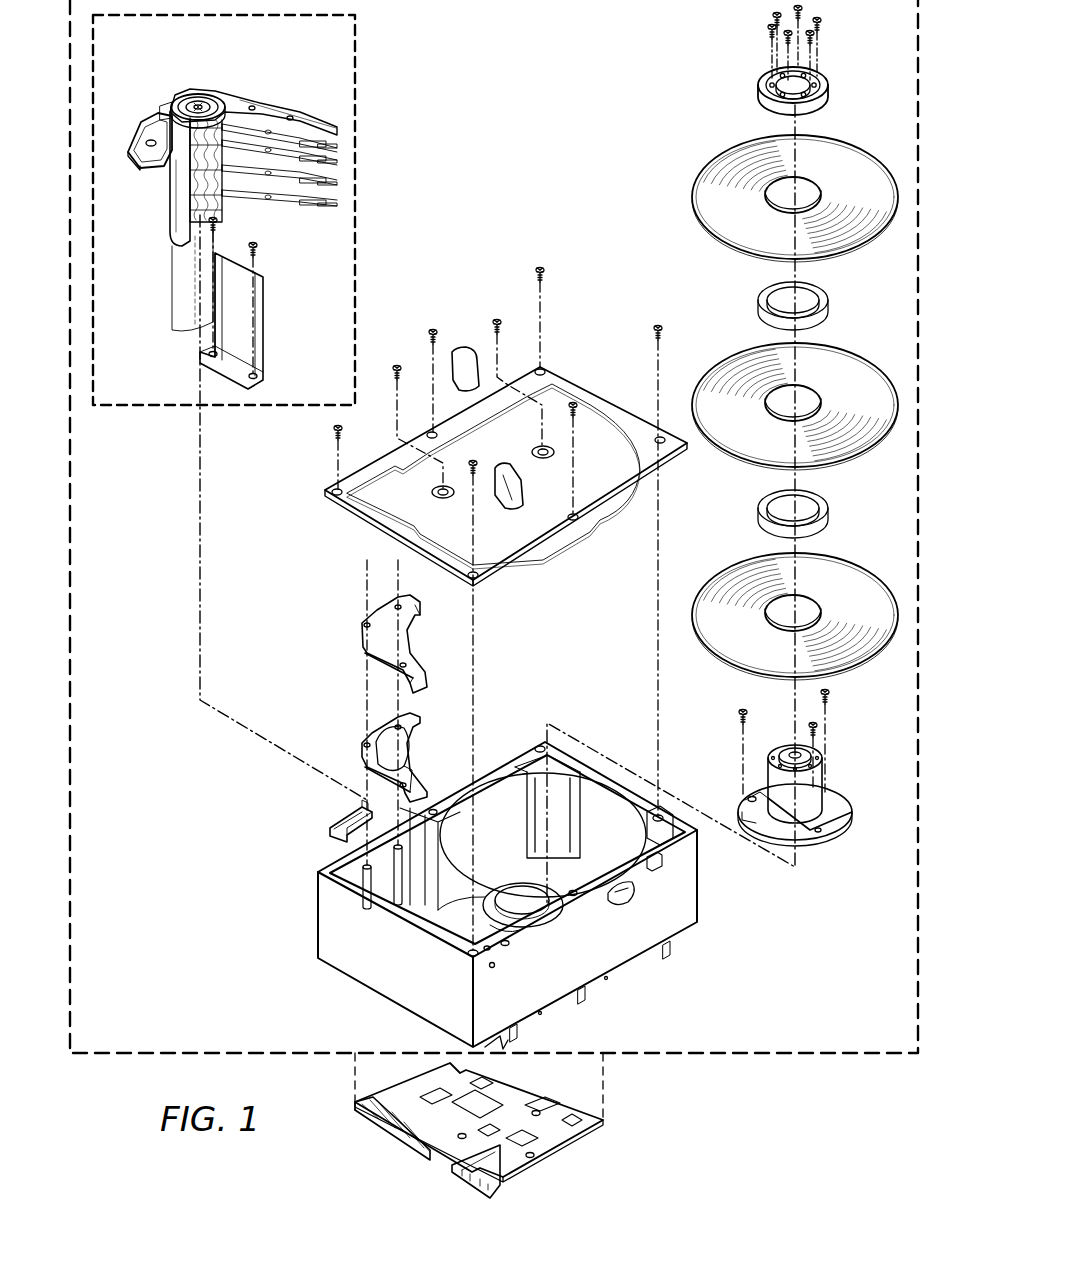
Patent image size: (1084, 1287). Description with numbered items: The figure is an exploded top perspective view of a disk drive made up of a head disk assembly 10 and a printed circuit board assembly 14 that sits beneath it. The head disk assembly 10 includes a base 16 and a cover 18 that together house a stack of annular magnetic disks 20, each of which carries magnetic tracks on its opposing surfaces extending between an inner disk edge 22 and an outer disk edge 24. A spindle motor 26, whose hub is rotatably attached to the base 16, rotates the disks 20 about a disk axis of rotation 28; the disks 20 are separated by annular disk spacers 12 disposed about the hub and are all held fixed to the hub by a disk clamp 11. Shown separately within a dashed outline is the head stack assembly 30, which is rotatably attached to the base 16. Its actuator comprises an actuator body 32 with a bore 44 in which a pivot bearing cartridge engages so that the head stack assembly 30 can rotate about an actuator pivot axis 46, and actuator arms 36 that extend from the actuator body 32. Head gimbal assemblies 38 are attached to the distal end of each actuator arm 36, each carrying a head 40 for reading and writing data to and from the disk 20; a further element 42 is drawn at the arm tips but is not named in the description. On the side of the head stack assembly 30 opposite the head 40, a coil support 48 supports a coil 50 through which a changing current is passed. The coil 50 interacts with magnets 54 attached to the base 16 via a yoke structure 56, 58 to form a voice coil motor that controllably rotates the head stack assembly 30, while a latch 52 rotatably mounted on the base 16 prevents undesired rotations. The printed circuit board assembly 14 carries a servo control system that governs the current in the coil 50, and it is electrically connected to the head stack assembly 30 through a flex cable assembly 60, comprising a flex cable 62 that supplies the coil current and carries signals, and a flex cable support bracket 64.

The head disk assembly 10 is at (703, 1058).
The disk clamp 11 is at (818, 74).
The annular disk spacer 12 is at (758, 306).
The printed circuit board assembly 14 is at (574, 1142).
The base 16 is at (640, 958).
The cover 18 is at (546, 366).
The annular magnetic disk 20 is at (794, 400).
The inner disk edge 22 is at (820, 193).
The outer disk edge 24 is at (738, 246).
The spindle motor 26 is at (838, 836).
The disk axis of rotation 28 is at (781, 862).
The head stack assembly 30 is at (155, 412).
The actuator body 32 is at (192, 96).
The actuator arm 36 is at (238, 108).
The head gimbal assembly 38 is at (296, 122).
The head 40 is at (330, 205).
The read/write head 42 is at (316, 132).
The bore 44 is at (208, 99).
The actuator pivot axis 46 is at (290, 758).
The coil support 48 is at (141, 124).
The coil 50 is at (162, 110).
The latch 52 is at (330, 832).
The magnet 54 is at (385, 762).
The yoke structure 56 is at (380, 642).
The yoke structure 58 is at (410, 778).
The flex cable assembly 60 is at (171, 218).
The flex cable 62 is at (182, 322).
The flex cable support bracket 64 is at (266, 330).